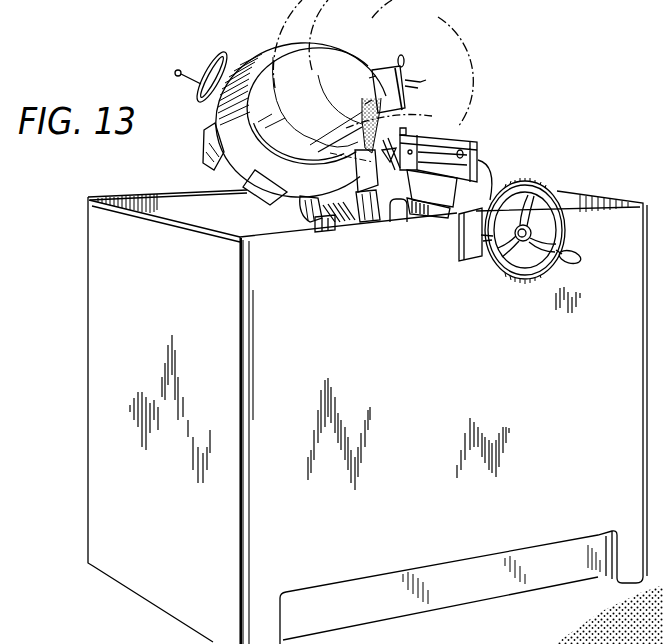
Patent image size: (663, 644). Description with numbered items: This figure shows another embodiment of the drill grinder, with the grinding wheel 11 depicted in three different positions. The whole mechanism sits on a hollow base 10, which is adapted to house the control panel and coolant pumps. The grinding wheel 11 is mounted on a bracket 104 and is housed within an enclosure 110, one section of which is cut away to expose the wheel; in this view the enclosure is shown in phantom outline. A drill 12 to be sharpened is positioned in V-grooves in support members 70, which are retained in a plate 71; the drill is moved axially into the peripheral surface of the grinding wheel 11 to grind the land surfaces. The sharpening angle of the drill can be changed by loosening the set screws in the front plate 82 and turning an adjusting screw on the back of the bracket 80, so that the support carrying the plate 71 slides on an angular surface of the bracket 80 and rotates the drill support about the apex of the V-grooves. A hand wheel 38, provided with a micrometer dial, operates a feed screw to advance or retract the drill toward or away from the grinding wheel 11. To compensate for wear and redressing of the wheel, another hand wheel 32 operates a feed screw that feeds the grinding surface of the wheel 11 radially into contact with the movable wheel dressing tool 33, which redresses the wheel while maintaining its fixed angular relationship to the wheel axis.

The hollow base 10 is at (96, 475).
The grinding wheel 11 is at (426, 112).
The drill 12 is at (305, 132).
The hand wheel 32 is at (229, 44).
The wheel dressing tool 33 is at (403, 75).
The hand wheel 38 is at (517, 282).
The support members 70 is at (432, 194).
The plate 71 is at (480, 147).
The bracket 80 is at (493, 190).
The front plate 82 is at (453, 221).
The bracket 104 is at (330, 228).
The enclosure 110 is at (470, 38).